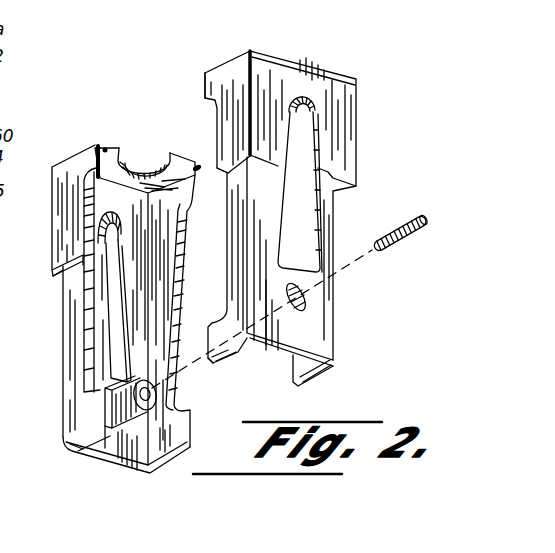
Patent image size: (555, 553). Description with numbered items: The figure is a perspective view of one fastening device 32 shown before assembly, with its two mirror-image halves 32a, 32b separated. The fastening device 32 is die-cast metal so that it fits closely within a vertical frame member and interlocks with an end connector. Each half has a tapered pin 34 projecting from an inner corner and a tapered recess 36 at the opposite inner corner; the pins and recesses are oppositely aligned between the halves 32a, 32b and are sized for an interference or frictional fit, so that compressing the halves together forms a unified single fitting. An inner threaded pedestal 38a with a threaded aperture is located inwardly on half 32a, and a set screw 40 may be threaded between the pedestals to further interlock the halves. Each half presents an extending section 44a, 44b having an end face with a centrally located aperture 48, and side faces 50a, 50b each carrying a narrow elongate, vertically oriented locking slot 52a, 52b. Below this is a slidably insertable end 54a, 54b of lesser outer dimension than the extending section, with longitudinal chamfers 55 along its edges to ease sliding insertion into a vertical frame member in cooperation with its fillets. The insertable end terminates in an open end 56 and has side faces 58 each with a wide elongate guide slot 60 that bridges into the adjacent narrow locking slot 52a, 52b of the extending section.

The fastening device 32 is at (306, 52).
The mirror-image half 32a is at (63, 166).
The mirror-image half 32b is at (358, 84).
The tapered pin 34 is at (195, 166).
The tapered recess 36 is at (105, 148).
The inner threaded pedestal 38a is at (156, 393).
The set screw 40 is at (407, 240).
The extending section 44a is at (68, 217).
The extending section 44b is at (352, 143).
The aperture 48 is at (143, 160).
The side face 50a is at (68, 242).
The side face 50b is at (343, 165).
The locking slot 52a is at (100, 275).
The locking slot 52b is at (300, 125).
The slidably insertable end 54a is at (70, 403).
The slidably insertable end 54b is at (307, 300).
The longitudinal chamfer 55 is at (63, 342).
The open end 56 is at (115, 447).
The side face 58 is at (313, 330).
The guide slot 60 is at (110, 348).